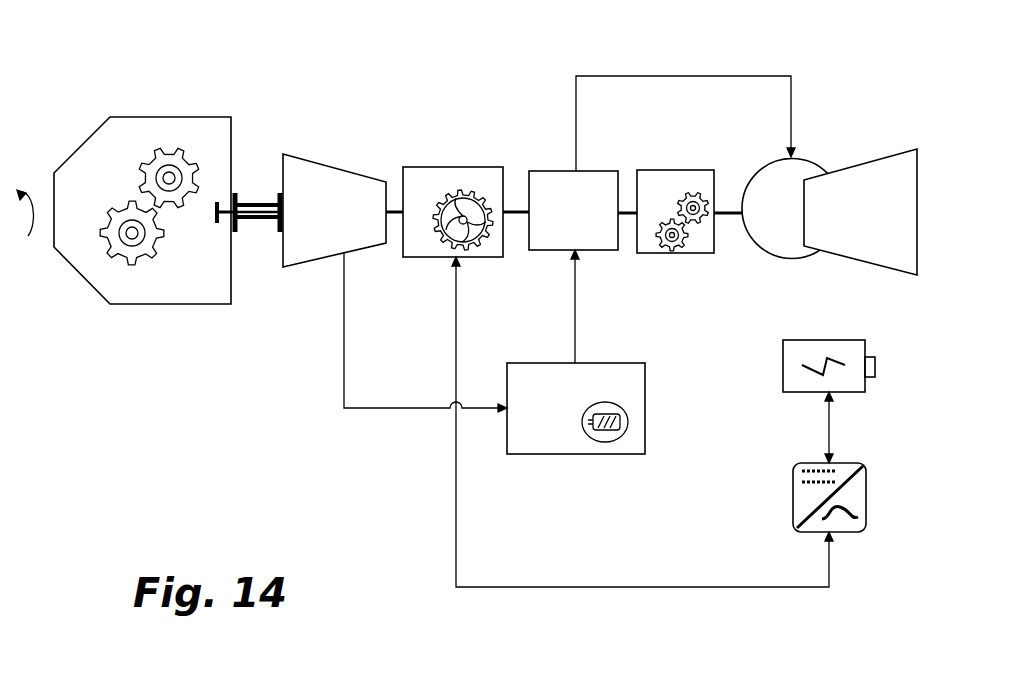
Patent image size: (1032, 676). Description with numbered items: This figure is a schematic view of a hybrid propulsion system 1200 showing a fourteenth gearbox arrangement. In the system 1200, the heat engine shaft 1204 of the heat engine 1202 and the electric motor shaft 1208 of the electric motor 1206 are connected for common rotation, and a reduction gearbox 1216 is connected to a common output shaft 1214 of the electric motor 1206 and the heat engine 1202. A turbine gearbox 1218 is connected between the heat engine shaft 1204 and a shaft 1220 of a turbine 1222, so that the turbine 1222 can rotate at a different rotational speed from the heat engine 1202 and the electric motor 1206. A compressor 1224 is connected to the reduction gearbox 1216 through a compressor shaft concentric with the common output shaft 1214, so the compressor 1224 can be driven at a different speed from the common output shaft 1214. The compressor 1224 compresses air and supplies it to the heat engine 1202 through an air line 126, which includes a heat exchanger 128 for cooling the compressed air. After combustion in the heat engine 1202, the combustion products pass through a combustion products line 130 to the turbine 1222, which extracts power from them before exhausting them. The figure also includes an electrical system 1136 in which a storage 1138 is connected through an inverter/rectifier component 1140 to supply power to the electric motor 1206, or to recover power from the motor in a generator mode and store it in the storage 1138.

The system 1200 is at (93, 38).
The reduction gearbox 1216 is at (173, 117).
The shaft of a turbine 1220 is at (266, 200).
The common output shaft 1214 is at (266, 225).
The compressor 1224 is at (340, 166).
The electric motor shaft 1208 is at (397, 217).
The electric motor 1206 is at (453, 167).
The heat engine shaft 1204 is at (517, 217).
The heat engine 1202 is at (543, 171).
The combustion products line 130 is at (719, 76).
The turbine gearbox 1218 is at (688, 170).
The turbine 1222 is at (867, 265).
The air line 126 is at (374, 408).
The heat exchanger 128 is at (610, 363).
The electrical system 1136 is at (847, 603).
The storage 1138 is at (867, 350).
The inverter/rectifier component 1140 is at (867, 487).